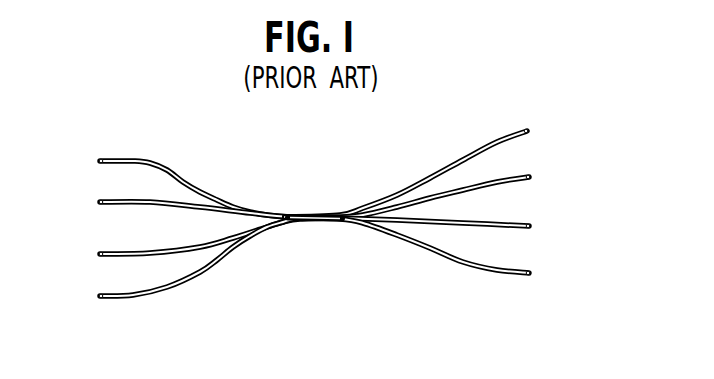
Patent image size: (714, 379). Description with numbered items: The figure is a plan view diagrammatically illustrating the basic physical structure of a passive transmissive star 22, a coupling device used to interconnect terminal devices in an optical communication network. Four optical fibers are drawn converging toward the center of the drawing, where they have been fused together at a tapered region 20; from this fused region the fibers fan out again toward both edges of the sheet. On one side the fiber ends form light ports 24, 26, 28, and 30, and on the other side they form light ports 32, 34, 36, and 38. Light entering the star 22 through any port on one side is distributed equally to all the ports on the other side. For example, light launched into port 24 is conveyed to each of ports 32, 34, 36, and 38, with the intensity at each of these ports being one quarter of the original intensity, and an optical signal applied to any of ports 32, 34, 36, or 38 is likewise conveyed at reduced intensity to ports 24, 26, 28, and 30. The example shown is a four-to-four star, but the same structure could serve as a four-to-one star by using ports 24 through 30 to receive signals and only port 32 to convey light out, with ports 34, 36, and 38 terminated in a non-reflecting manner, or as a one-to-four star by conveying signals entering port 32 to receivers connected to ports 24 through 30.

The tapered region 20 is at (314, 220).
The star 22 is at (314, 188).
The light port 24 is at (98, 162).
The light port 26 is at (98, 203).
The light port 28 is at (98, 254).
The light port 30 is at (98, 296).
The light port 32 is at (531, 131).
The light port 34 is at (533, 177).
The light port 36 is at (533, 226).
The light port 38 is at (533, 273).